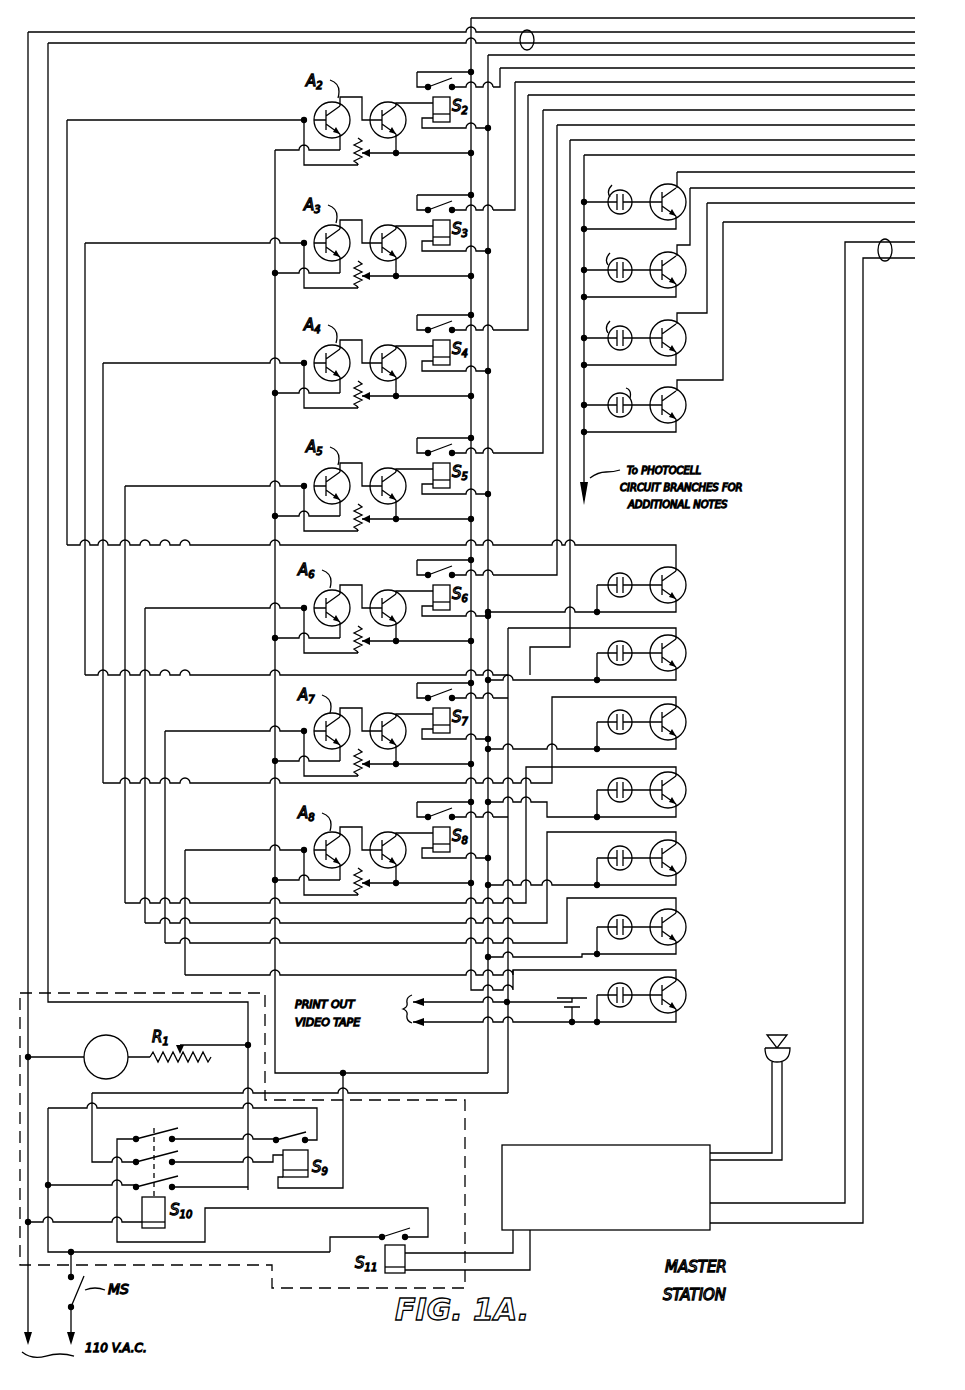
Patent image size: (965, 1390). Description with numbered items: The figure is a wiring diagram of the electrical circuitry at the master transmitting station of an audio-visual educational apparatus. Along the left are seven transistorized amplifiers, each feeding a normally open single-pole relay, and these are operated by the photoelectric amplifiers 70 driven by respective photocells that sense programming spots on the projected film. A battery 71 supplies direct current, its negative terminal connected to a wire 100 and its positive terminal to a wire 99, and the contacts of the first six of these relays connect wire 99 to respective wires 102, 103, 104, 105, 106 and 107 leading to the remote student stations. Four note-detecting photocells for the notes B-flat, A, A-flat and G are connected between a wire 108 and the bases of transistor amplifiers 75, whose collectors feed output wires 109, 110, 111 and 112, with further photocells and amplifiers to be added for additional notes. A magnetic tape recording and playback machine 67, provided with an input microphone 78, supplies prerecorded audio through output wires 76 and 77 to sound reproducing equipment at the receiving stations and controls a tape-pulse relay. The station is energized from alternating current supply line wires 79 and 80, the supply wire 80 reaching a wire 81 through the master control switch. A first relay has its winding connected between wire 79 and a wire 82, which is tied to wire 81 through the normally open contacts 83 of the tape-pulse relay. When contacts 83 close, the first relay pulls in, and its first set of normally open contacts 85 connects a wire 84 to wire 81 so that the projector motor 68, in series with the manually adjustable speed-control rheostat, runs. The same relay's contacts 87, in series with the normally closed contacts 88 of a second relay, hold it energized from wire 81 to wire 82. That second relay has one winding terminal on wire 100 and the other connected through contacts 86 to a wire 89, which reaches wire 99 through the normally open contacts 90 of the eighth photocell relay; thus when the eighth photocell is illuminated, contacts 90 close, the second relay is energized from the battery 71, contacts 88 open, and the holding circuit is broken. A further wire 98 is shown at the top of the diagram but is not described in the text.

The magnetic tape recording and playback machine 67 is at (622, 1125).
The projector motor 68 is at (86, 1039).
The photoelectric amplifiers 70 is at (700, 975).
The battery 71 is at (558, 1003).
The transistor amplifiers 75 is at (688, 352).
The audio output wire 76 is at (822, 820).
The audio output wire 77 is at (866, 790).
The input microphone 78 is at (781, 1026).
The alternating current supply line wire 79 is at (664, 33).
The alternating current supply line wire 80 is at (76, 1320).
The wire 81 is at (54, 1120).
The wire 82 is at (205, 1218).
The normally open contacts 83 is at (384, 1231).
The wire 84 is at (714, 45).
The normally open contacts 85 is at (180, 1184).
The normally open contacts 86 is at (180, 1159).
The normally open contacts 87 is at (180, 1136).
The normally closed contacts 88 is at (302, 1134).
The wire 89 is at (497, 1095).
The normally open contacts 90 is at (424, 816).
The conductor 98 is at (583, 20).
The wire 99 is at (470, 62).
The wire 100 is at (758, 57).
The wire 102 is at (596, 70).
The wire 103 is at (632, 84).
The wire 104 is at (669, 97).
The wire 105 is at (709, 112).
The wire 106 is at (746, 127).
The wire 107 is at (787, 142).
The wire 108 is at (827, 157).
The output wire 109 is at (852, 174).
The output wire 110 is at (862, 190).
The output wire 111 is at (822, 205).
The output wire 112 is at (772, 228).